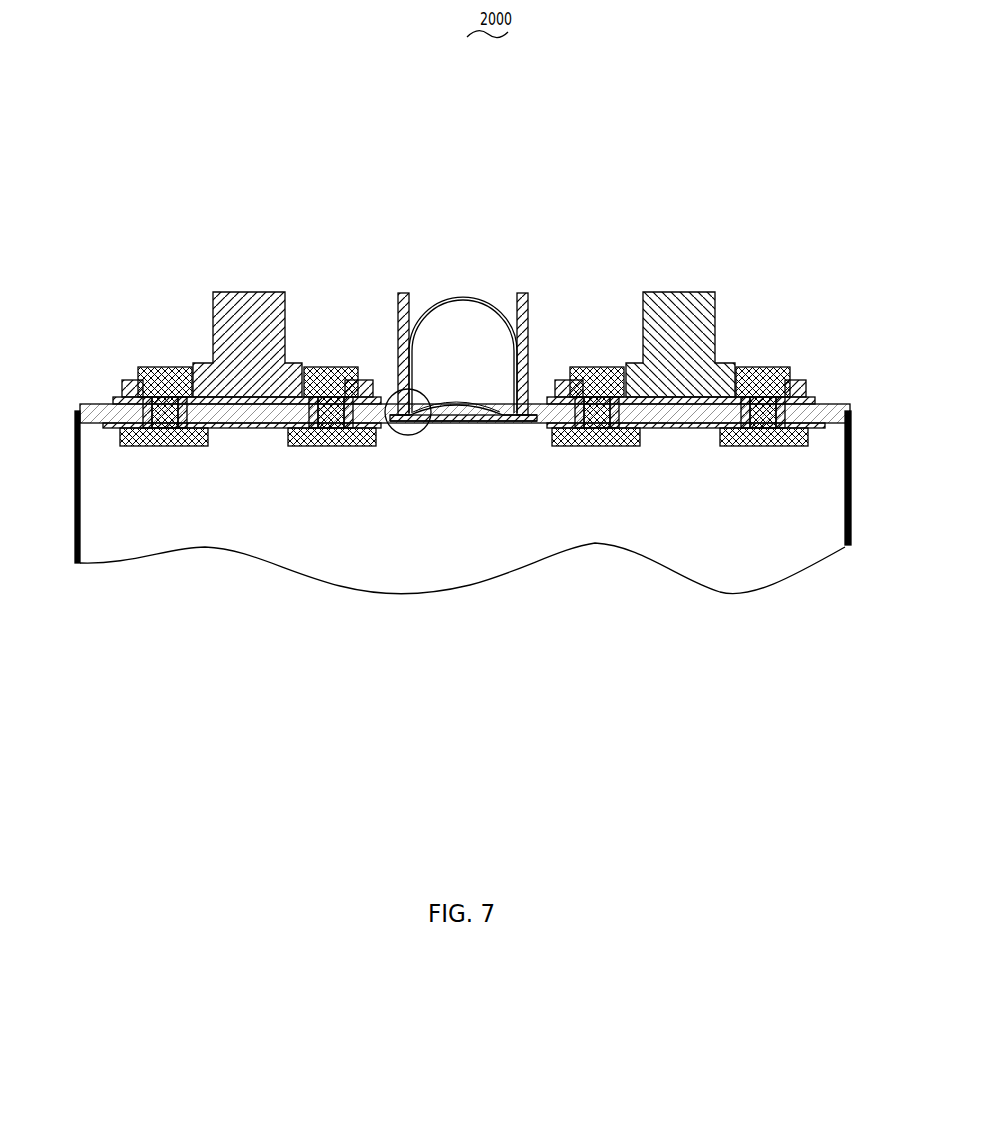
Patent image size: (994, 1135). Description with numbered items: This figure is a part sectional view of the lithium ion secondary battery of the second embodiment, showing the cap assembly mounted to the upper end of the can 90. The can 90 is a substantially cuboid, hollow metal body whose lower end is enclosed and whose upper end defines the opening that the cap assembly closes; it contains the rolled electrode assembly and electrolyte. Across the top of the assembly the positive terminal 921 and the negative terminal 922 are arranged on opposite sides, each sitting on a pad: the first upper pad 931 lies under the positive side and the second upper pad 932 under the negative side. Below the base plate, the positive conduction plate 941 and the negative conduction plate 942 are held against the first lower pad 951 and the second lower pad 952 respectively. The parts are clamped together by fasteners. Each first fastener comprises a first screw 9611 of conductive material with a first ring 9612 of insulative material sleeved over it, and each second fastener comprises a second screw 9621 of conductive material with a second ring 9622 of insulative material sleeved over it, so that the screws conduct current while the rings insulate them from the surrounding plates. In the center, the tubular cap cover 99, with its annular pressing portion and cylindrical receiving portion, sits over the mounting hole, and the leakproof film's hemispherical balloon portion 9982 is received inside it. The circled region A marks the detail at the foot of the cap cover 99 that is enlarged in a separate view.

The can 90 is at (300, 522).
The cap cover 99 is at (400, 296).
The dome diaphragm 9982 is at (452, 297).
The detail region A is at (390, 402).
The positive terminal 921 is at (133, 380).
The negative terminal 922 is at (794, 380).
The first upper pad 931 is at (114, 398).
The second upper pad 932 is at (807, 397).
The positive conduction plate 941 is at (122, 431).
The negative conduction plate 942 is at (811, 434).
The first lower pad 951 is at (108, 426).
The second lower pad 952 is at (824, 427).
The first screw 9611 is at (166, 367).
The first ring 9612 is at (331, 367).
The second screw 9621 is at (596, 367).
The second ring 9622 is at (763, 367).